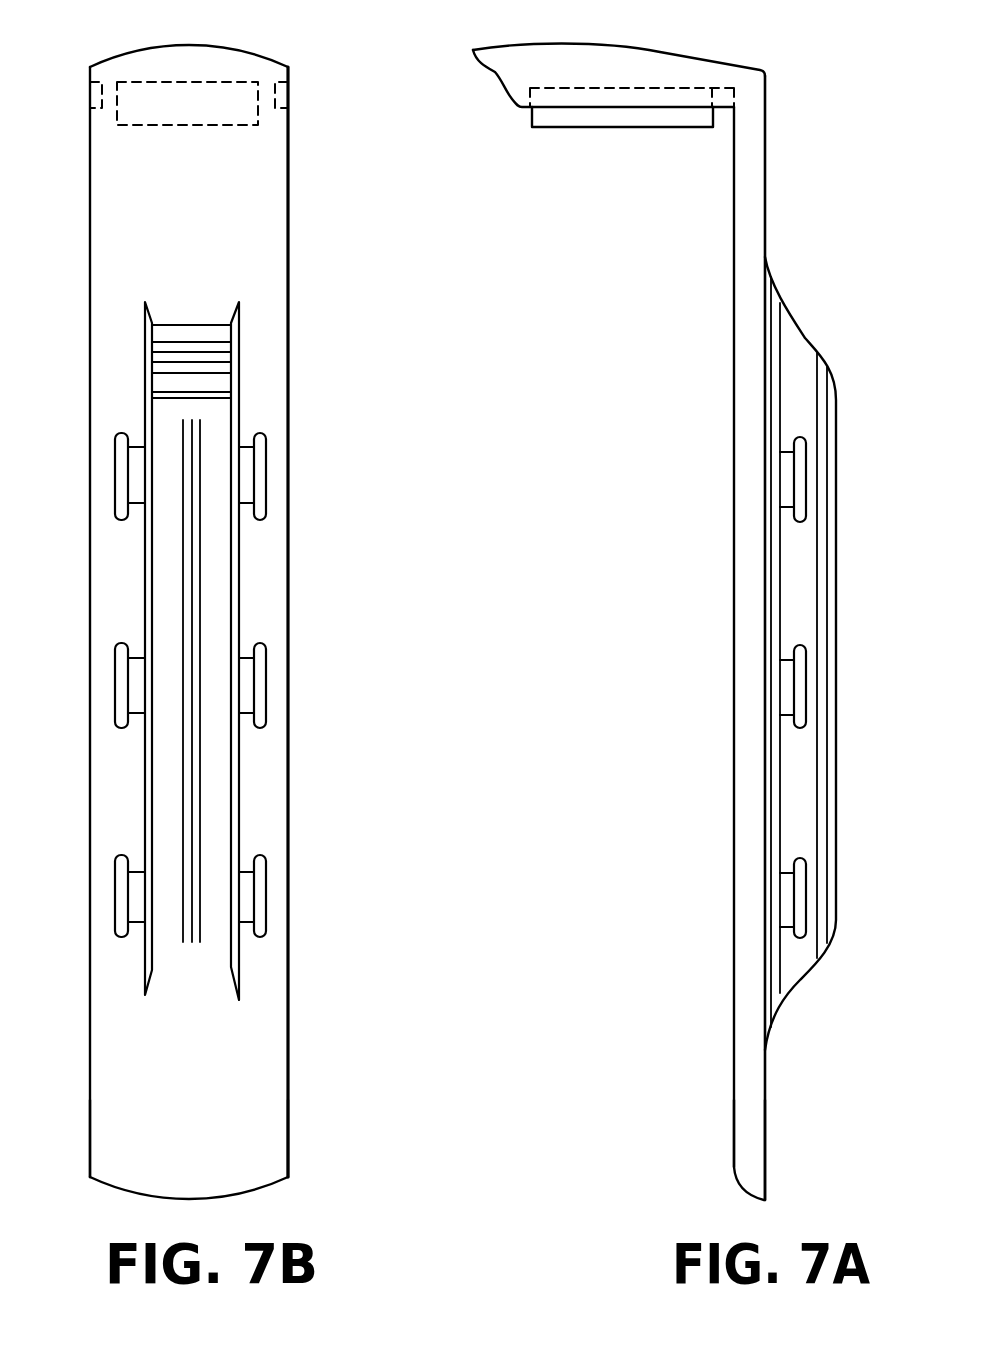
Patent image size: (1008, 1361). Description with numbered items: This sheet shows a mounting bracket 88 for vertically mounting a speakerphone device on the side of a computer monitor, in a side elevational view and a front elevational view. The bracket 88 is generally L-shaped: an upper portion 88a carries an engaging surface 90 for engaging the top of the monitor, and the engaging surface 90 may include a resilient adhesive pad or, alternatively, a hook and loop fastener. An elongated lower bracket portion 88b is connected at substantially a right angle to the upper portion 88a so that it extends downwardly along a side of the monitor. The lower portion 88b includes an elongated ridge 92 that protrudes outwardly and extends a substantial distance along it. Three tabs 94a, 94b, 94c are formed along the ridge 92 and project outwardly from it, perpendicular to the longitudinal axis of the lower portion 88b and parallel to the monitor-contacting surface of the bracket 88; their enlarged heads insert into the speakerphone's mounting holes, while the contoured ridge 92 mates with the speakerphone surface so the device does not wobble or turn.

In FIG. 7B, the mounting bracket 88 is at (294, 224).
In FIG. 7A, the mounting bracket 88 is at (774, 148).
In FIG. 7B, the upper portion 88a is at (294, 98).
In FIG. 7A, the upper portion 88a is at (640, 52).
In FIG. 7B, the lower bracket portion 88b is at (288, 1027).
In FIG. 7A, the lower bracket portion 88b is at (766, 1093).
In FIG. 7A, the engaging surface 90 is at (571, 128).
In FIG. 7B, the elongated ridge 92 is at (235, 410).
In FIG. 7A, the elongated ridge 92 is at (838, 440).
In FIG. 7B, the tab 94a is at (244, 451).
In FIG. 7A, the tab 94a is at (800, 500).
In FIG. 7B, the tab 94b is at (244, 658).
In FIG. 7A, the tab 94b is at (798, 705).
In FIG. 7B, the tab 94c is at (244, 862).
In FIG. 7A, the tab 94c is at (802, 916).